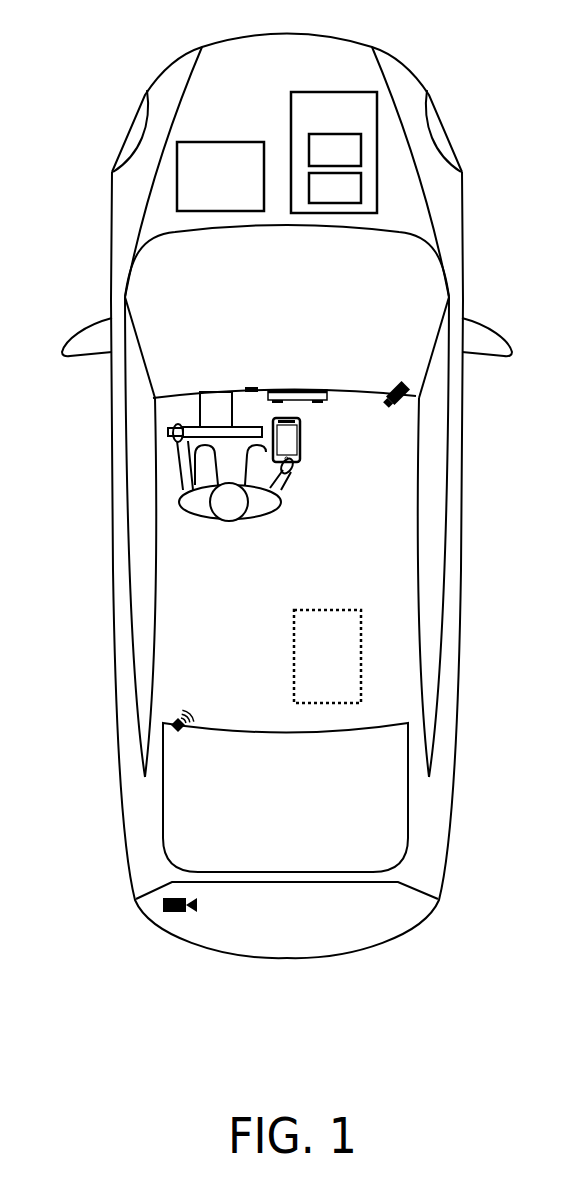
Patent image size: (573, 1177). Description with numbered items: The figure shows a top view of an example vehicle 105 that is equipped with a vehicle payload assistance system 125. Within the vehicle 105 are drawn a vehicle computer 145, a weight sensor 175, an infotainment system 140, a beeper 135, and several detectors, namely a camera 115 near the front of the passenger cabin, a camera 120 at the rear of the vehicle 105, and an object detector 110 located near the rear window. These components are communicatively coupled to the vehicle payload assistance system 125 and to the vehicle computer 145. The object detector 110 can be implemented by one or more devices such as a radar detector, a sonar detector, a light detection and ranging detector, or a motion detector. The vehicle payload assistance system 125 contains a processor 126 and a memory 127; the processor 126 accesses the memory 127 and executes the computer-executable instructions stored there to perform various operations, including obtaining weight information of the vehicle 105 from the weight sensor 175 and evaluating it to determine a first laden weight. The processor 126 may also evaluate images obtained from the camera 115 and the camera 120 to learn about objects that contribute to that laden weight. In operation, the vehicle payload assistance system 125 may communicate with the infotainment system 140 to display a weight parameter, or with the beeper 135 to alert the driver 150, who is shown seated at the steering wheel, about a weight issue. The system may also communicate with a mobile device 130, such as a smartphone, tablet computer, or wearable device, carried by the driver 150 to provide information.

The vehicle 105 is at (90, 79).
The object detector 110 is at (177, 732).
The camera 115 is at (403, 401).
The camera 120 is at (180, 913).
The vehicle payload assistance system 125 is at (329, 123).
The processor 126 is at (316, 160).
The memory 127 is at (316, 198).
The mobile device 130 is at (300, 424).
The beeper 135 is at (251, 387).
The infotainment system 140 is at (317, 390).
The vehicle computer 145 is at (201, 188).
The driver 150 is at (243, 521).
The weight sensor 175 is at (309, 666).